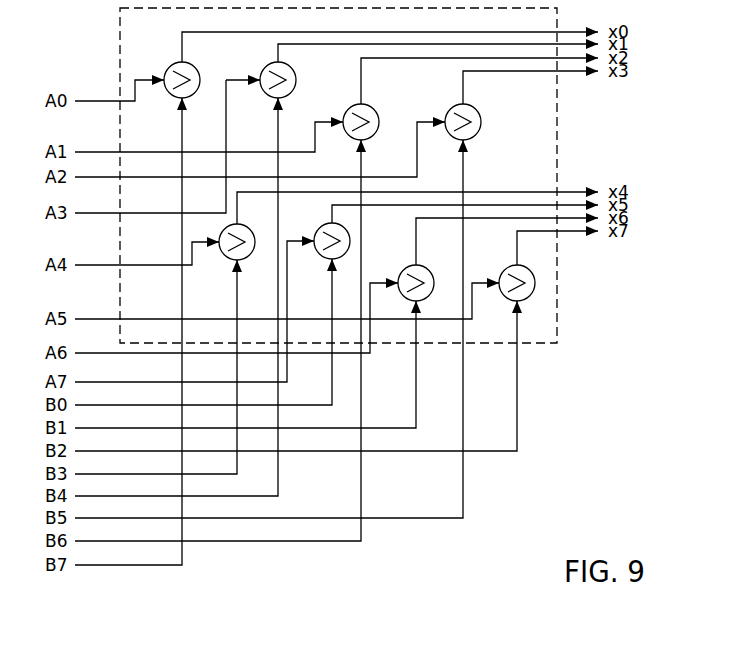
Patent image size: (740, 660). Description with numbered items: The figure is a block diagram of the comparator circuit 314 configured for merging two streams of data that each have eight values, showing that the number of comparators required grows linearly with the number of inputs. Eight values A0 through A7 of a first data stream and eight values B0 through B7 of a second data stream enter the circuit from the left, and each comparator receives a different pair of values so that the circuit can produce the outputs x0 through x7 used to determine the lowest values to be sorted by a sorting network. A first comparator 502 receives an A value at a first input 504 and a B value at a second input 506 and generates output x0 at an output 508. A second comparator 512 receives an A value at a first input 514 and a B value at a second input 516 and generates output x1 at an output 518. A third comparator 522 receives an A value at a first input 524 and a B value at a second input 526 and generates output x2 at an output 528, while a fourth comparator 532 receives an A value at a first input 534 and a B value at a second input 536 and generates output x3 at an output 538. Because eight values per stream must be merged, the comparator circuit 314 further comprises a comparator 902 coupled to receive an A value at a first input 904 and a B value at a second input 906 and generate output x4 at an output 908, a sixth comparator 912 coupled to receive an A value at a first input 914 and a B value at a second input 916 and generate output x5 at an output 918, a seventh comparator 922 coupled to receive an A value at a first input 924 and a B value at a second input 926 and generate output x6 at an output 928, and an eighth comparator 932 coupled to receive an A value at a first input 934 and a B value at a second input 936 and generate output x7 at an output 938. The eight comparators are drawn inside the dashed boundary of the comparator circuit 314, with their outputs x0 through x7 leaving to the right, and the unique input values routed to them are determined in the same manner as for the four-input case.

The comparator circuit 314 is at (120, 40).
The first comparator 502 is at (196, 68).
The first input 504 is at (162, 92).
The second input 506 is at (188, 100).
The output 508 is at (181, 58).
The second comparator 512 is at (294, 74).
The first input 514 is at (258, 92).
The second input 516 is at (282, 100).
The output 518 is at (276, 61).
The third comparator 522 is at (376, 110).
The first input 524 is at (342, 134).
The second input 526 is at (367, 142).
The output 528 is at (360, 104).
The fourth comparator 532 is at (478, 112).
The first input 534 is at (444, 134).
The second input 536 is at (470, 142).
The output 538 is at (462, 104).
The fifth comparator 902 is at (252, 232).
The first input 904 is at (216, 254).
The second input 906 is at (244, 262).
The output 908 is at (226, 212).
The sixth comparator 912 is at (348, 234).
The first input 914 is at (312, 252).
The second input 916 is at (336, 262).
The output 918 is at (331, 222).
The seventh comparator 922 is at (430, 272).
The first input 924 is at (396, 286).
The second input 926 is at (420, 304).
The output 928 is at (414, 266).
The eighth comparator 932 is at (532, 272).
The first input 934 is at (498, 288).
The second input 936 is at (520, 304).
The output 938 is at (516, 266).